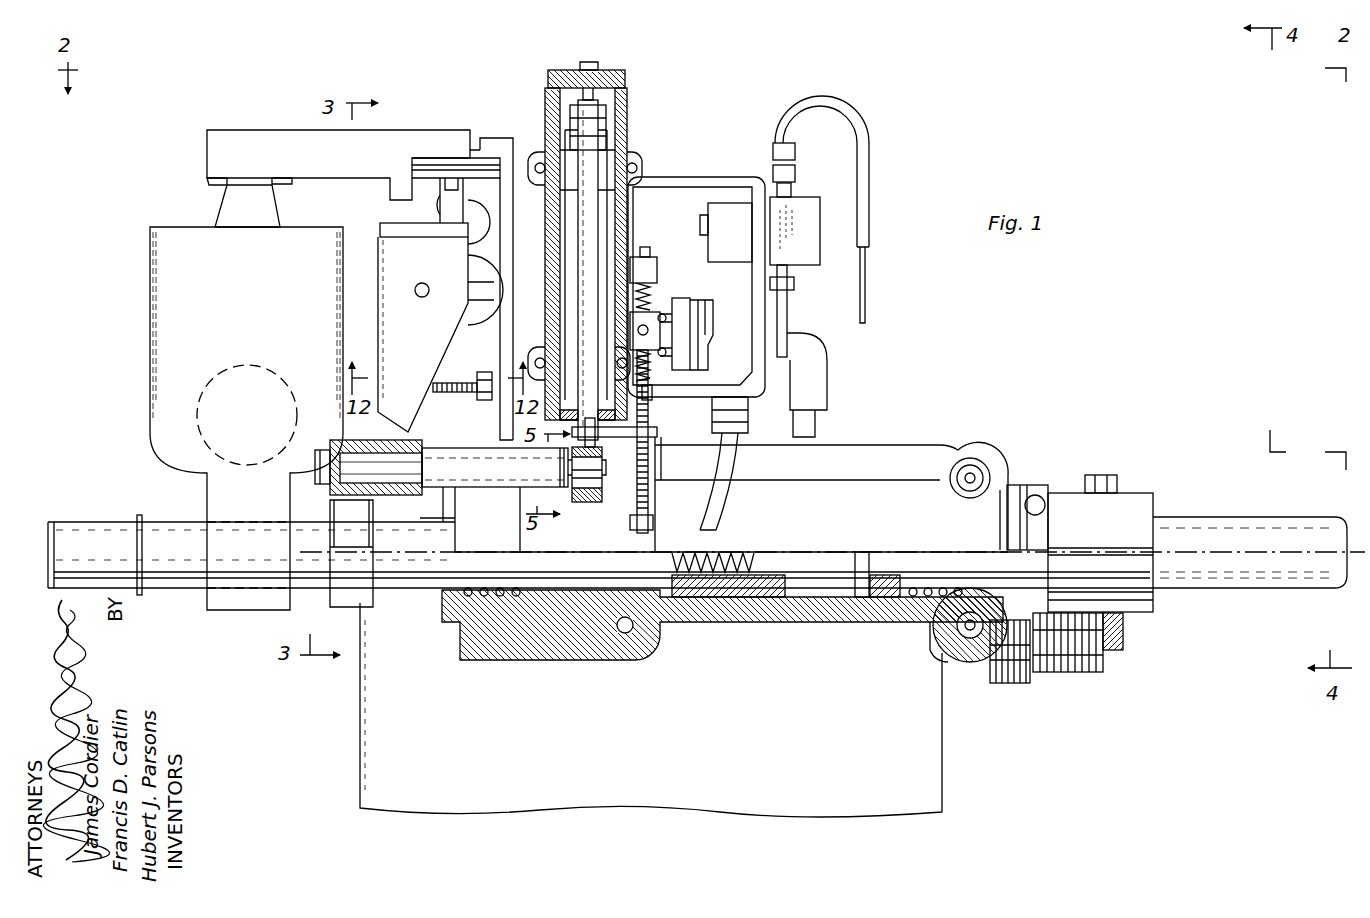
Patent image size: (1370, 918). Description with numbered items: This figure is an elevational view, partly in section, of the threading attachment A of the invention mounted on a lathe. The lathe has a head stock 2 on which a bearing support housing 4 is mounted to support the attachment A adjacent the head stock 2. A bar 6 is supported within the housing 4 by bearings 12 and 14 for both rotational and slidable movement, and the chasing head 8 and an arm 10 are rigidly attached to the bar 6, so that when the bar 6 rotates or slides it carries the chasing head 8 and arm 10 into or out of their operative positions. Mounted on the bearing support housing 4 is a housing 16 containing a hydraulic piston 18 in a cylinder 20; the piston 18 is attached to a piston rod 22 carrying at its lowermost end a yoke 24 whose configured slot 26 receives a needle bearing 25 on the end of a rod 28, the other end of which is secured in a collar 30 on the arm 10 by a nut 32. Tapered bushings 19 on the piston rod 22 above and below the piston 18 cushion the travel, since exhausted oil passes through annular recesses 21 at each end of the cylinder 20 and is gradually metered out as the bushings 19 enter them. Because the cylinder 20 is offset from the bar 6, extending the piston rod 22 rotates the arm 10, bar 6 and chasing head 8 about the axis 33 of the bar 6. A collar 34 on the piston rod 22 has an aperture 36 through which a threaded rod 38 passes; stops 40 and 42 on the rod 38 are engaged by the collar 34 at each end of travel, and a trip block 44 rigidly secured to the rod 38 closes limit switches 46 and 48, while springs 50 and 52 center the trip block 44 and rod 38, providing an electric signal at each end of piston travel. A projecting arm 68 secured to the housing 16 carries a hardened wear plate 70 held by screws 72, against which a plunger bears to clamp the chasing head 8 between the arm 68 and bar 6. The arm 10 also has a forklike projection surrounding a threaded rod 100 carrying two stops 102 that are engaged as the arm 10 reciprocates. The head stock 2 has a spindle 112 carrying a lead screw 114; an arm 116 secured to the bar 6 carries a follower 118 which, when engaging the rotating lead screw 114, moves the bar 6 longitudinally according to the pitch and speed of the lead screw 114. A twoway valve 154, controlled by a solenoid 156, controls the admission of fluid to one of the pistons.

The lathe attachment A is at (513, 90).
The head stock 2 is at (956, 766).
The bearing support housing 4 is at (857, 519).
The bar 6 is at (1222, 520).
The chasing head 8 is at (152, 452).
The arm 10 is at (392, 332).
The bearing 12 is at (505, 588).
The bearing 14 is at (912, 586).
The housing 16 is at (712, 170).
The hydraulic piston 18 is at (606, 158).
The tapered bushings 19 is at (546, 156).
The cylinder 20 is at (608, 245).
The annular recesses 21 is at (603, 115).
The piston rod 22 is at (576, 258).
The yoke 24 is at (600, 504).
The needle bearing 25 is at (568, 452).
The configured slot 26 is at (584, 503).
The rod 28 is at (490, 488).
The collar 30 is at (388, 495).
The nut 32 is at (322, 448).
The axis 33 is at (1268, 553).
The collar 34 is at (660, 444).
The aperture 36 is at (596, 445).
The threaded rod 38 is at (652, 500).
The stop 40 is at (660, 434).
The stop 42 is at (655, 522).
The trip block 44 is at (704, 336).
The limit switch 46 is at (672, 304).
The limit switch 48 is at (650, 355).
The spring 50 is at (654, 294).
The spring 52 is at (654, 396).
The projecting arm 68 is at (252, 130).
The hardened wear plate 70 is at (272, 190).
The screws 72 is at (214, 183).
The threaded rod 100 is at (460, 383).
The stops 102 is at (484, 400).
The spindle 112 is at (945, 662).
The lead screw 114 is at (1080, 675).
The arm 116 is at (1130, 492).
The follower 118 is at (1010, 685).
The twoway valve 154 is at (808, 242).
The solenoid 156 is at (745, 247).